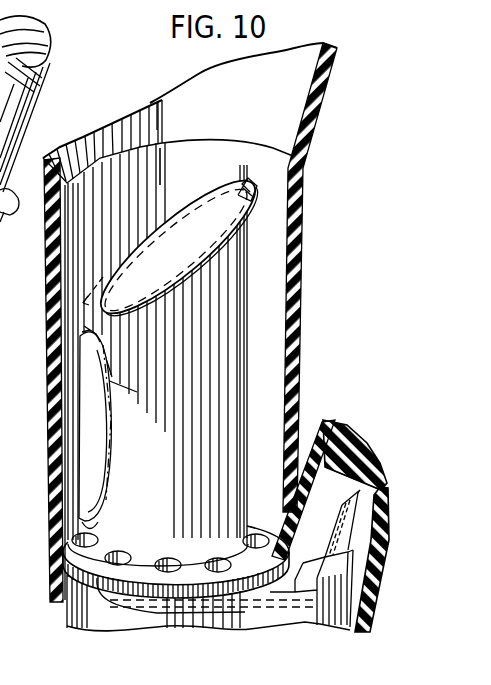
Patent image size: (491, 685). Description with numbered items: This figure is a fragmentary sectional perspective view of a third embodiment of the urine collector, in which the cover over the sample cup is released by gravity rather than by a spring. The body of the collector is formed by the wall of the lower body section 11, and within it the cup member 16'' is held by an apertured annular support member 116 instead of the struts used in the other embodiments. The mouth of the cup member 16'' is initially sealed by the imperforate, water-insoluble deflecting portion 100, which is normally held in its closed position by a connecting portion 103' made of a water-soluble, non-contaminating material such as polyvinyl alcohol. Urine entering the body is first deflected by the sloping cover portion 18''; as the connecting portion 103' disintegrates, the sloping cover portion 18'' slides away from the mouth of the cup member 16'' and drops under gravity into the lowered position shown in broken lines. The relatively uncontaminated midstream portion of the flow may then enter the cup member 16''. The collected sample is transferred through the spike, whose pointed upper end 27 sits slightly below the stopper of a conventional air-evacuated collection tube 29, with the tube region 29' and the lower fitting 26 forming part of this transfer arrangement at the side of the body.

The lower body section 11 is at (315, 127).
The apertured annular support member 116 is at (56, 608).
The cup member 16'' is at (173, 354).
The water-insoluble deflecting portion 100 is at (207, 236).
The connecting portion 103' is at (257, 174).
The sloping cover portion 18'' is at (150, 337).
The collection tube 29 is at (329, 471).
The bracket inner face 29' is at (342, 515).
The pointed upper end 27 is at (347, 535).
The base block 26 is at (343, 612).